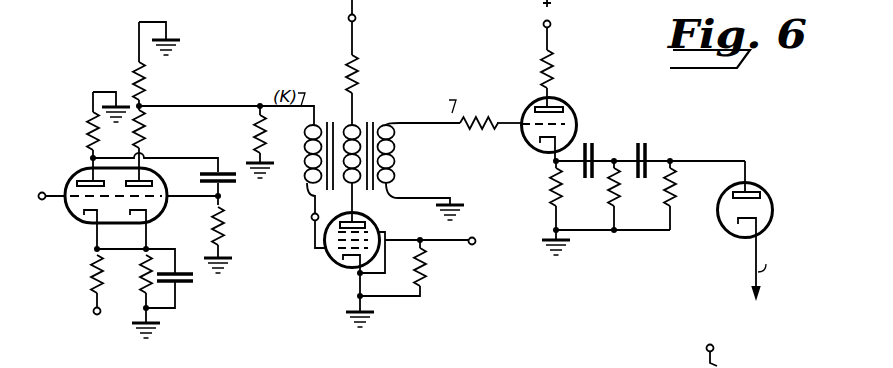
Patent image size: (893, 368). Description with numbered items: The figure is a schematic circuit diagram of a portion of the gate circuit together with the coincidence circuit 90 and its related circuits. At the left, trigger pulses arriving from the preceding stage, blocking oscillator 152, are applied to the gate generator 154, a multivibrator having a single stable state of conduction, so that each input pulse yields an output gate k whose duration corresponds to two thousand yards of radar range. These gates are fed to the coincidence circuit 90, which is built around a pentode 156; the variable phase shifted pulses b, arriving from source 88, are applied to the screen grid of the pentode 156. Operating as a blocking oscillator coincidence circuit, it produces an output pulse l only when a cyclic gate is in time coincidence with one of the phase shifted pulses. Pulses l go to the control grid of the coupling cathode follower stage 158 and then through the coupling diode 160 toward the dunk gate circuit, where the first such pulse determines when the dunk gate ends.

The gate generator 154 is at (135, 249).
The pentode 156 is at (338, 266).
The coupling cathode follower stage 158 is at (528, 150).
The coupling diode 160 is at (774, 204).
The coincidence circuit 90 is at (444, 181).
The blocking oscillator 152 is at (54, 200).
The phase shifted pips source 88 is at (471, 245).